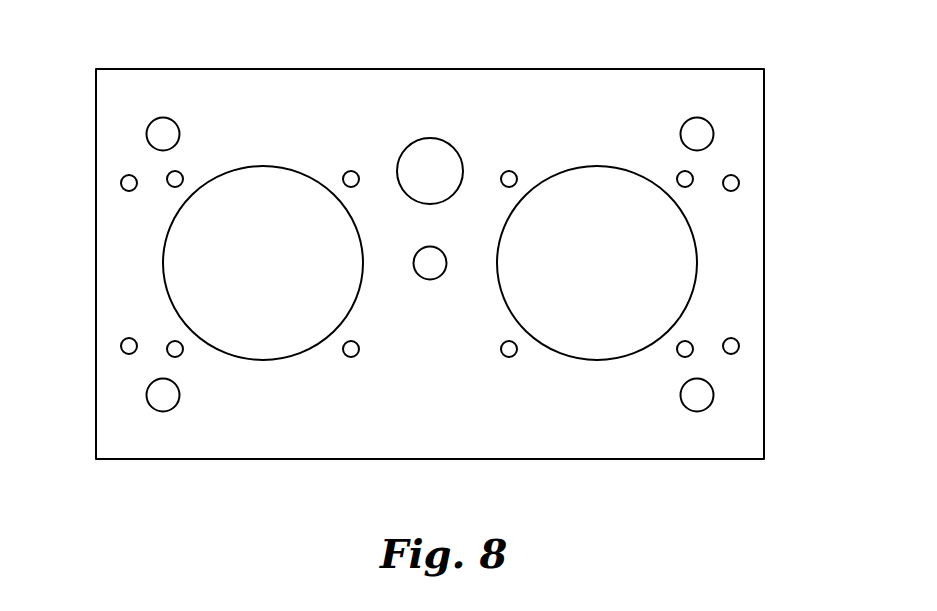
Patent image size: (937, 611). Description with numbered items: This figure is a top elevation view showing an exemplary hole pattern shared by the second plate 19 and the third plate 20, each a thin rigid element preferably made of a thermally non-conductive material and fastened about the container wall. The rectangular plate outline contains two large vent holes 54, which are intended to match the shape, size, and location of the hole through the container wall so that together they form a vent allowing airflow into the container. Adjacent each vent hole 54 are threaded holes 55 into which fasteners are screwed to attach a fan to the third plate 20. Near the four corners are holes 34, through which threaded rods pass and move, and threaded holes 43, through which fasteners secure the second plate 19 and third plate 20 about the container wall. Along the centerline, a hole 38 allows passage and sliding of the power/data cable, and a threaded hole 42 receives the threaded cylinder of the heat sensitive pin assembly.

The second plate 19 is at (430, 236).
The third plate 20 is at (207, 68).
The holes 34 is at (146, 135).
The hole 38 is at (430, 138).
The threaded hole 42 is at (430, 280).
The threaded holes 43 is at (121, 183).
The vent holes 54 is at (262, 360).
The threaded holes 55 is at (346, 172).